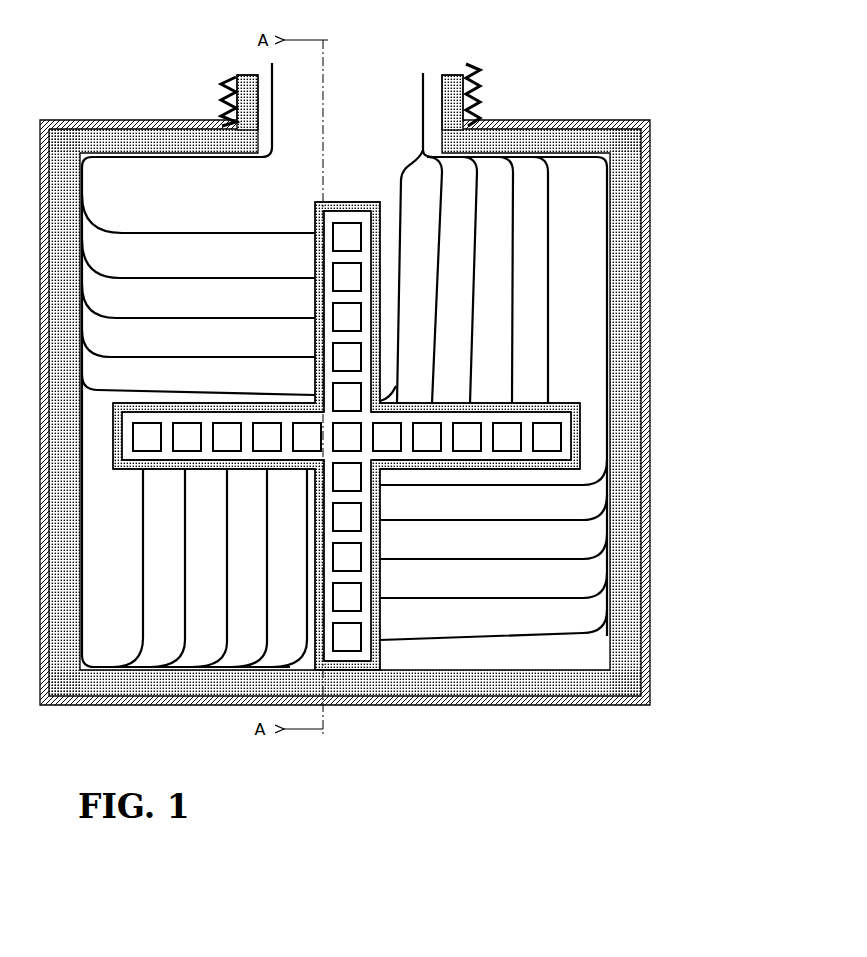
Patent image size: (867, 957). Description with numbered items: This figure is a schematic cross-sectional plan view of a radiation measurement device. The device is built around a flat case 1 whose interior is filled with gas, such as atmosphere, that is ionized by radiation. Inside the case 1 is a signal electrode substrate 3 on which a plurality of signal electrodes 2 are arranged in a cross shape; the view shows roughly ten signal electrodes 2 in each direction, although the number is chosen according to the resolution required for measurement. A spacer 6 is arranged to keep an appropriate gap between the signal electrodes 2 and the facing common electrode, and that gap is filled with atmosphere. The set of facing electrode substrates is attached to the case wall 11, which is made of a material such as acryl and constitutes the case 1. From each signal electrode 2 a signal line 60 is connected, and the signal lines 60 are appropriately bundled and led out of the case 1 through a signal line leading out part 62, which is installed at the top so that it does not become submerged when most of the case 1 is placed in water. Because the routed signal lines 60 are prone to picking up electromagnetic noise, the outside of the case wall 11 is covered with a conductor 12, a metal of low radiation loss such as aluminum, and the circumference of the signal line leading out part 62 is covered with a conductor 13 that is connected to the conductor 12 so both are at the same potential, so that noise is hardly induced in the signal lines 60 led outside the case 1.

The case 1 is at (750, 108).
The signal electrode 2 is at (553, 433).
The signal electrode substrate 3 is at (578, 401).
The spacer 6 is at (313, 207).
The case wall 11 is at (625, 185).
The conductor 12 is at (608, 121).
The conductor 13 is at (480, 97).
The signal line 60 is at (273, 118).
The signal line leading out part 62 is at (250, 77).